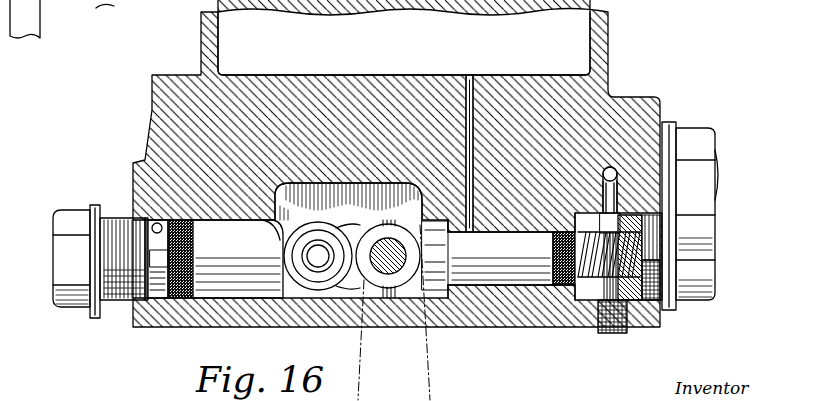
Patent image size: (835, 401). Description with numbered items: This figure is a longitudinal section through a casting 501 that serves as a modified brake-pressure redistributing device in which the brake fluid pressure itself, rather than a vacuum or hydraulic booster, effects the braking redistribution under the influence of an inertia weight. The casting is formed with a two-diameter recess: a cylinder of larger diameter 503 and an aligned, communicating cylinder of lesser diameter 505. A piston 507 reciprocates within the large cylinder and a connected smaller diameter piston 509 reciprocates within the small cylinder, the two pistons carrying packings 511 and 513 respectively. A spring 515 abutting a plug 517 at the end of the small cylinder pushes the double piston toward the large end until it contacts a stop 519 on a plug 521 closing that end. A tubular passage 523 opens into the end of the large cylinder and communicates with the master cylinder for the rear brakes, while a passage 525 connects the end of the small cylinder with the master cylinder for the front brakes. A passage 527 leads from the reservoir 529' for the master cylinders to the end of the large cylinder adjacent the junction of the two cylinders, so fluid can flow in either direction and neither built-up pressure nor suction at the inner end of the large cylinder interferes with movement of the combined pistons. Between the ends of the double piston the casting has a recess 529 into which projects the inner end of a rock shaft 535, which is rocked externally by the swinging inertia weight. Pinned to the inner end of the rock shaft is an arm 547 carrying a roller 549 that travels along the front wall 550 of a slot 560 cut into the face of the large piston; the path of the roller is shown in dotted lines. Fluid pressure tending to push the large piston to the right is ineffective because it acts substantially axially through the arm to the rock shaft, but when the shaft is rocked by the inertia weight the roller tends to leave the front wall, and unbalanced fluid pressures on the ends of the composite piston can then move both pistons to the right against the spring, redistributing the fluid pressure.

The casting 501 is at (603, 98).
The cylinder of larger diameter 503 is at (163, 302).
The cylinder of lesser diameter 505 is at (490, 282).
The piston 507 is at (230, 282).
The smaller diameter piston 509 is at (527, 268).
The packing 511 is at (157, 205).
The packing 513 is at (568, 280).
The spring 515 is at (662, 308).
The plug 517 is at (707, 252).
The stop 519 is at (138, 298).
The plug 521 is at (77, 238).
The tubular passage 523 is at (132, 218).
The passage 525 is at (615, 187).
The passage 527 is at (468, 102).
The recess 529 is at (348, 126).
The reservoir 529' is at (452, 37).
The rock shaft 535 is at (407, 262).
The arm 547 is at (366, 303).
The roller 549 is at (307, 283).
The front wall 550 is at (273, 227).
The slot 560 is at (420, 190).